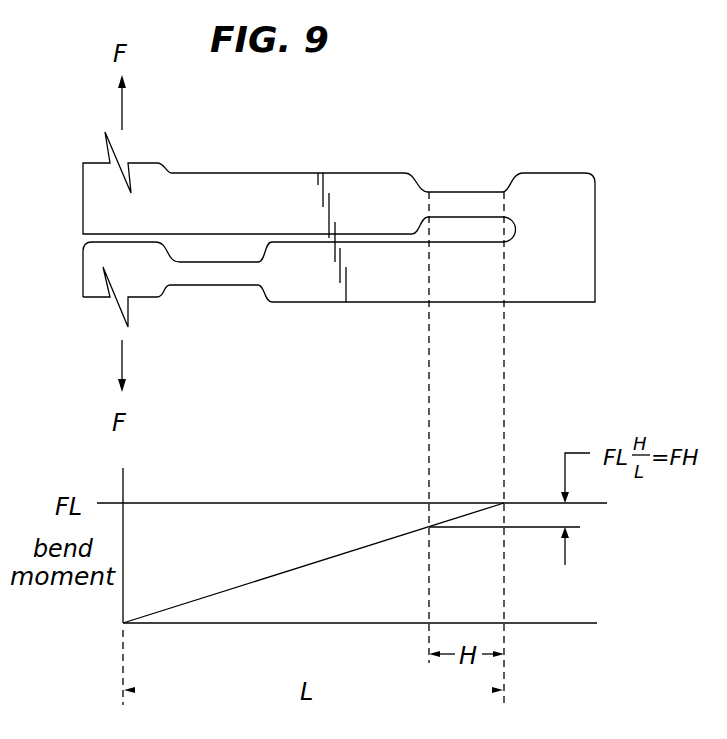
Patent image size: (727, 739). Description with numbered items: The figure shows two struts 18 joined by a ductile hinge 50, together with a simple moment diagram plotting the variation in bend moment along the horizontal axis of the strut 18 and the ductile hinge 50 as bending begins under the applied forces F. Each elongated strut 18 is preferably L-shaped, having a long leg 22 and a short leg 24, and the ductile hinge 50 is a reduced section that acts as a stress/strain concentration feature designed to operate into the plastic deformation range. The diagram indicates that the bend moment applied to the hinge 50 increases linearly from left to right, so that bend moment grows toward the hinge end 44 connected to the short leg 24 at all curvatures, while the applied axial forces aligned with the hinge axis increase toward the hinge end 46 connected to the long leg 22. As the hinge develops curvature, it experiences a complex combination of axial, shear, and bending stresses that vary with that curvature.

The elongated strut 18 is at (284, 168).
The long leg 22 is at (366, 188).
The short leg 24 is at (578, 228).
The hinge end 44 is at (506, 191).
The hinge end 46 is at (427, 192).
The ductile hinge 50 is at (468, 192).